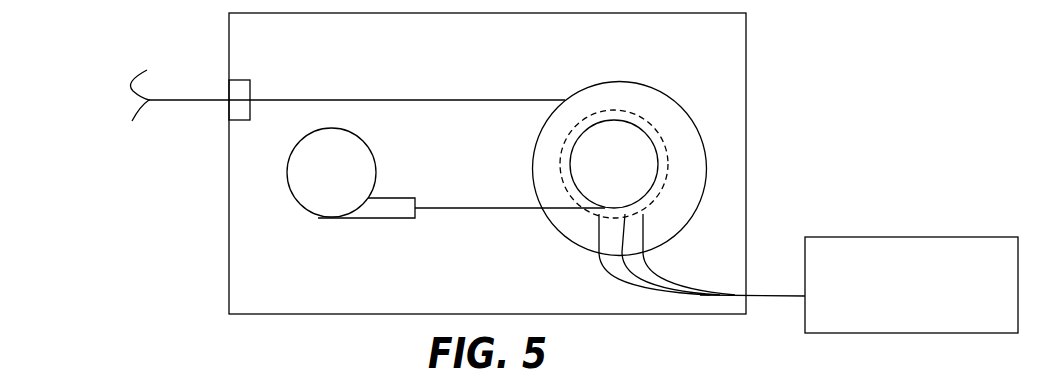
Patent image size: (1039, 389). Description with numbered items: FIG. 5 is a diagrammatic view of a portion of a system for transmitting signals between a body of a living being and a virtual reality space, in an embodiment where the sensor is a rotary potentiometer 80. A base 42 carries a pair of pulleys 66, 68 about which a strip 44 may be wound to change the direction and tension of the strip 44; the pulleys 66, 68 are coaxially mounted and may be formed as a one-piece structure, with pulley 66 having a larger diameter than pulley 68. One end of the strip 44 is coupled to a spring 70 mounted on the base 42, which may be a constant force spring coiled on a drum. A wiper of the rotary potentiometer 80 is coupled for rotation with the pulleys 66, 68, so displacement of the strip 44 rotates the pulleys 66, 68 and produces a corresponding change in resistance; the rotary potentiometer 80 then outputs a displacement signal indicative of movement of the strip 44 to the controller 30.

The controller 30 is at (931, 258).
The base 42 is at (268, 207).
The strip 44 is at (478, 97).
The pulley 66 is at (673, 120).
The pulley 68 is at (633, 157).
The spring 70 is at (388, 208).
The rotary potentiometer 80 is at (668, 176).